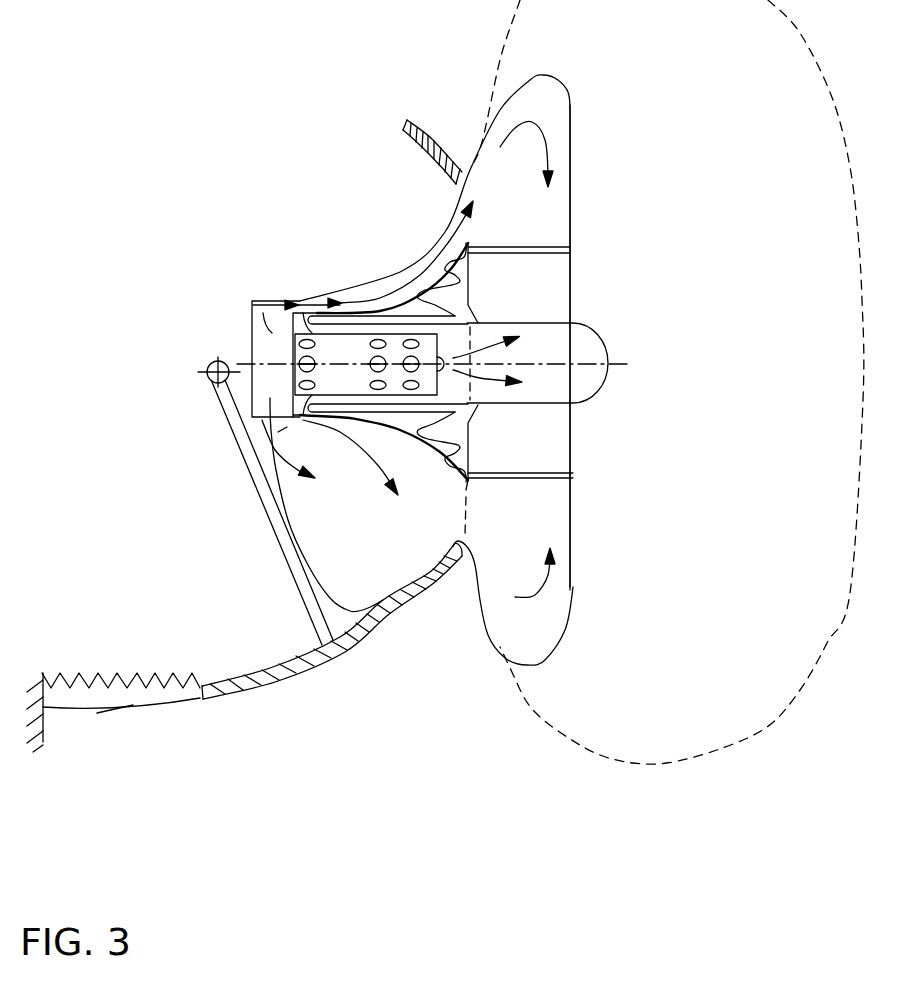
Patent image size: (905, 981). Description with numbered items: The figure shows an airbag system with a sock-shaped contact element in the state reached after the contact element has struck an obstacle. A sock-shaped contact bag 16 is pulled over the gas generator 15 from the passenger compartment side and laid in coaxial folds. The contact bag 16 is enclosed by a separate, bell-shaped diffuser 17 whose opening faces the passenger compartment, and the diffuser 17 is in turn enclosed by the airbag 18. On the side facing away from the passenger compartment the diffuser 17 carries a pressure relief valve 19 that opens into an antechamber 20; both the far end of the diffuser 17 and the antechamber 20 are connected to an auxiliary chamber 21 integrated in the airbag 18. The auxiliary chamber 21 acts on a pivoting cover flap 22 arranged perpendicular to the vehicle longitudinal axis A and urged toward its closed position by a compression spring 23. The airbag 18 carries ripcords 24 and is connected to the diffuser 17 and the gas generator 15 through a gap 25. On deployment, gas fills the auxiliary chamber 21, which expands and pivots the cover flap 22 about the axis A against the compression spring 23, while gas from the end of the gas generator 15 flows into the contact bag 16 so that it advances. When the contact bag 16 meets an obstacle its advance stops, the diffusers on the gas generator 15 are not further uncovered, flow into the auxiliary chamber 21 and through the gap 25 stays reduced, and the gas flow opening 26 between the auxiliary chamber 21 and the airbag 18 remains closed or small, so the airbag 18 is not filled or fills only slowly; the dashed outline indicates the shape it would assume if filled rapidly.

The gas generator 15 is at (332, 348).
The sock-shaped contact bag 16 is at (599, 337).
The bell-shaped diffuser 17 is at (392, 302).
The airbag 18 is at (517, 87).
The pressure relief valve 19 is at (293, 373).
The antechamber 20 is at (257, 318).
The auxiliary chamber 21 is at (365, 570).
The pivoting cover flap 22 is at (240, 687).
The compression spring 23 is at (115, 673).
The ripcords 24 is at (538, 475).
The gap 25 is at (428, 272).
The gas flow opening 26 is at (466, 497).
The vehicle longitudinal axis A is at (207, 368).